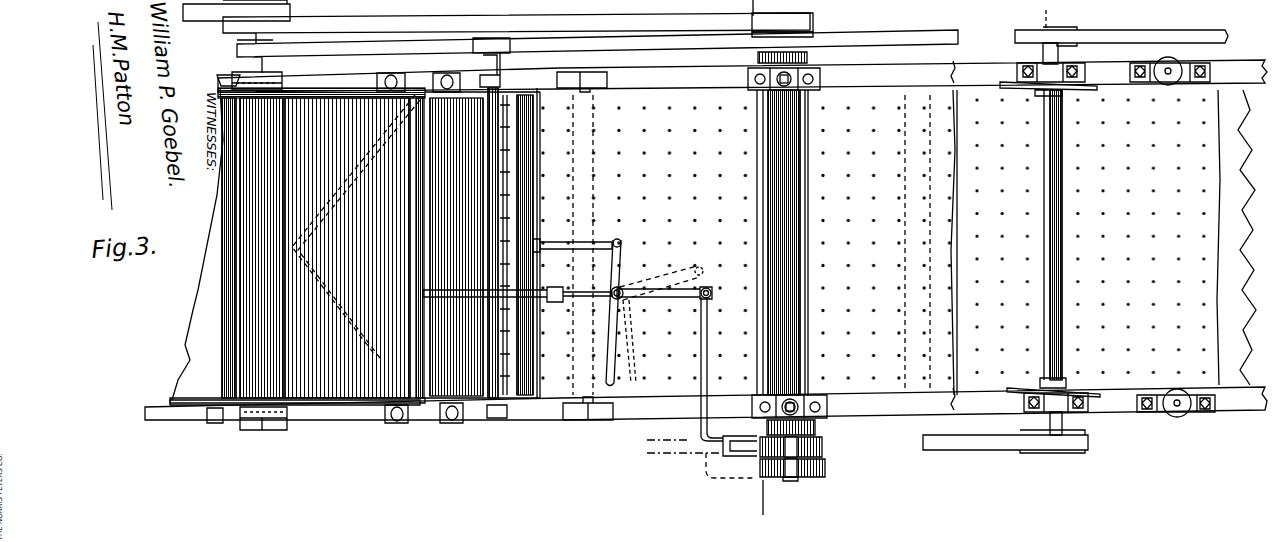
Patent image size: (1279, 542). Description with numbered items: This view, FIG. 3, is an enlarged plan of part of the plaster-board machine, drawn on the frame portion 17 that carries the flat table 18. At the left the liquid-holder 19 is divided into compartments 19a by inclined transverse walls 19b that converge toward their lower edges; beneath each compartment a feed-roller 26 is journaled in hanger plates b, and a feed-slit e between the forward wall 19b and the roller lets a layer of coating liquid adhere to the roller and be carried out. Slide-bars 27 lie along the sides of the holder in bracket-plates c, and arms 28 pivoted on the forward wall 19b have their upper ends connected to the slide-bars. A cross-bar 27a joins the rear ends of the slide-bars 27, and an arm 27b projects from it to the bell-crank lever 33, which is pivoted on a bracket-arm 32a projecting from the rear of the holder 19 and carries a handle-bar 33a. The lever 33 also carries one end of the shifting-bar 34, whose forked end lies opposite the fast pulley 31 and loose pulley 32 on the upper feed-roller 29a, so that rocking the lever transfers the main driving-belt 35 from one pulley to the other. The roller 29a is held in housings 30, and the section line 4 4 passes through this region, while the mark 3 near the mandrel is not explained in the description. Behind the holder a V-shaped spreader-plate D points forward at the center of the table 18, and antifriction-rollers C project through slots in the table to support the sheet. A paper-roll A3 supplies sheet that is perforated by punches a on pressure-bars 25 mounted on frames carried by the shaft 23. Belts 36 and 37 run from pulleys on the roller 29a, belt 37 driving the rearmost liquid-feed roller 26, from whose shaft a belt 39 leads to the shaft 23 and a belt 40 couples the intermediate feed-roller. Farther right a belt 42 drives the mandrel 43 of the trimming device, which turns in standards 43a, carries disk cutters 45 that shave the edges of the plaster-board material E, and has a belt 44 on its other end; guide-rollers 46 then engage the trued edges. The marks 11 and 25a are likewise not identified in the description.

The shaft 3 is at (1047, 14).
The section line 4 4 is at (784, 257).
The frame bar 11 is at (904, 409).
The frame portion 17 is at (1249, 410).
The table 18 is at (1241, 237).
The holder 19 is at (348, 400).
The compartment 19a is at (372, 400).
The transverse wall 19b is at (180, 358).
The shaft 23 is at (500, 67).
The pressure-bar 25 is at (490, 170).
The bearing block 25a is at (500, 118).
The feed-roller 26 is at (266, 371).
The slide-bar 27 is at (330, 84).
The cross-bar 27a is at (520, 190).
The arm 27b is at (566, 250).
The arm 28 is at (215, 422).
The upper feed-roller 29a is at (805, 283).
The housing 30 is at (752, 76).
The pulley 31 is at (827, 471).
The loose pulley 32 is at (824, 448).
The bracket-arm 32a is at (588, 291).
The bell-crank lever 33 is at (618, 270).
The handle-bar 33a is at (618, 346).
The shifting-bar 34 is at (815, 33).
The main driving-belt 35 is at (812, 18).
The belt 36 is at (929, 24).
The belt 37 is at (705, 14).
The endless belt 39 is at (381, 56).
The belt 40 is at (208, 22).
The belt 42 is at (990, 442).
The mandrel 43 is at (1058, 263).
The standard 43a is at (1040, 68).
The belt 44 is at (1140, 35).
The disk cutter 45 is at (1092, 78).
The guide-roller 46 is at (1176, 62).
The paper-roll A3 is at (497, 412).
The antifriction-roller C is at (580, 196).
The spreader-plate D is at (392, 78).
The plaster-board material E is at (876, 238).
The punch a is at (512, 218).
The hanger plate b is at (285, 75).
The bracket-plate c is at (245, 424).
The feed-slit e is at (240, 325).